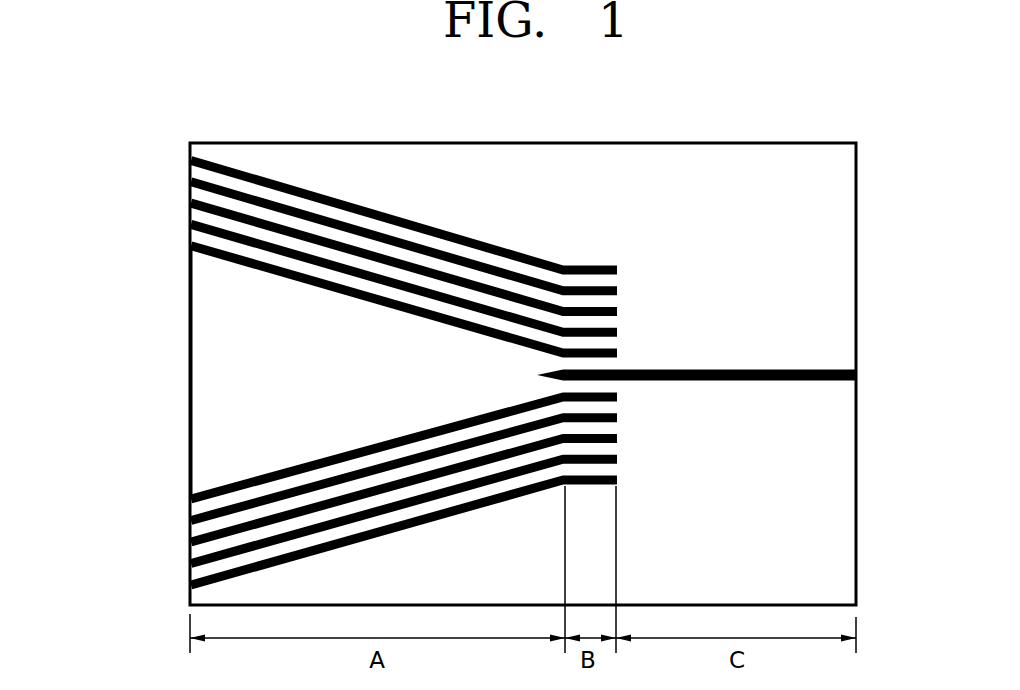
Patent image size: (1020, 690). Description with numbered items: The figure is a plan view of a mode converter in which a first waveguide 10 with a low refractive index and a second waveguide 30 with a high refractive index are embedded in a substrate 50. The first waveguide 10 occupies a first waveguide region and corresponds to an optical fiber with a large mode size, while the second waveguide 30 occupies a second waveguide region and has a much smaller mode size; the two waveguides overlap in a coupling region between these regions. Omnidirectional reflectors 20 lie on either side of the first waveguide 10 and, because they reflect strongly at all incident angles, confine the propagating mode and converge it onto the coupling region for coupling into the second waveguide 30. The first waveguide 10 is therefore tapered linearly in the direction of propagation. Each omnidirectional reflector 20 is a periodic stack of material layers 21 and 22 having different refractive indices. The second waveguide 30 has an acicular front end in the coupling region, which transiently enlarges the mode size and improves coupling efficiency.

The first waveguide 10 is at (179, 248).
The omnidirectional reflectors 20 is at (338, 359).
The material layer 21 is at (190, 160).
The material layer 22 is at (196, 172).
The second waveguide 30 is at (856, 375).
The substrate 50 is at (768, 122).